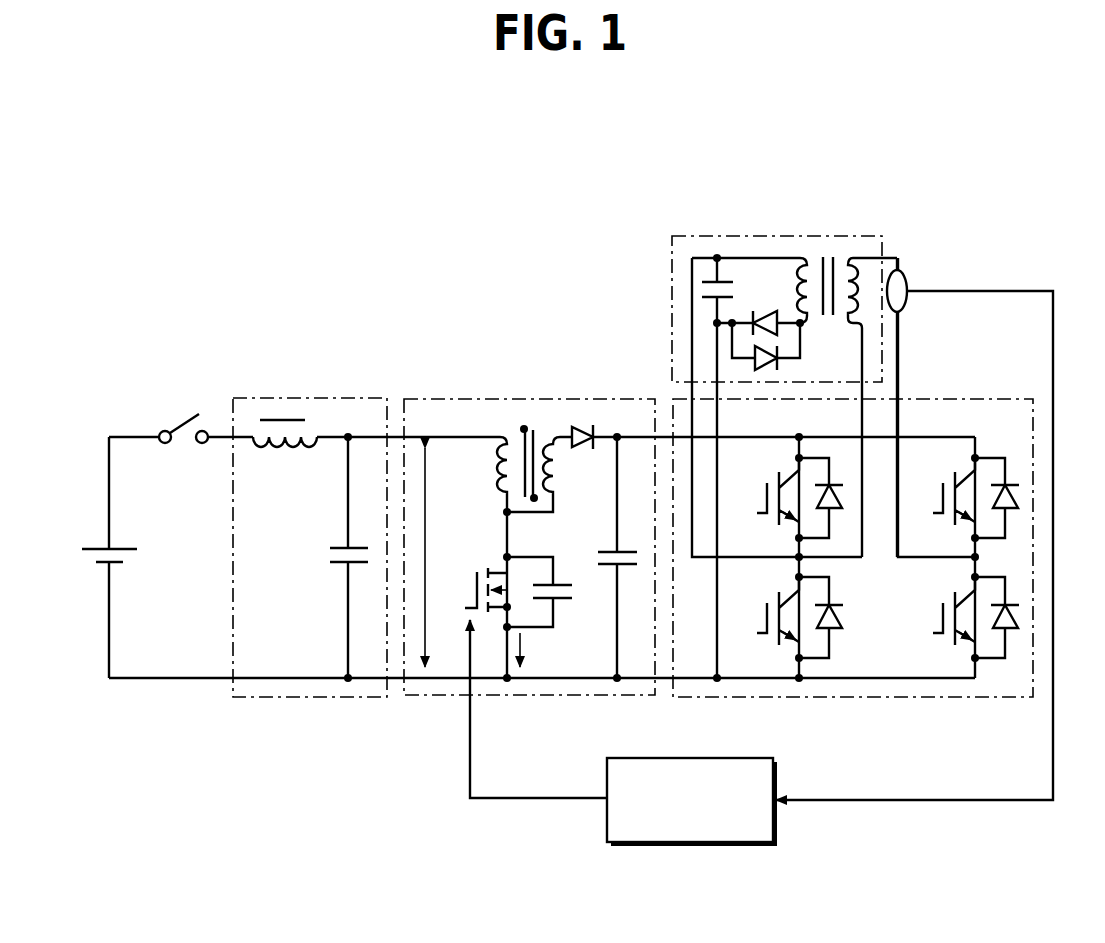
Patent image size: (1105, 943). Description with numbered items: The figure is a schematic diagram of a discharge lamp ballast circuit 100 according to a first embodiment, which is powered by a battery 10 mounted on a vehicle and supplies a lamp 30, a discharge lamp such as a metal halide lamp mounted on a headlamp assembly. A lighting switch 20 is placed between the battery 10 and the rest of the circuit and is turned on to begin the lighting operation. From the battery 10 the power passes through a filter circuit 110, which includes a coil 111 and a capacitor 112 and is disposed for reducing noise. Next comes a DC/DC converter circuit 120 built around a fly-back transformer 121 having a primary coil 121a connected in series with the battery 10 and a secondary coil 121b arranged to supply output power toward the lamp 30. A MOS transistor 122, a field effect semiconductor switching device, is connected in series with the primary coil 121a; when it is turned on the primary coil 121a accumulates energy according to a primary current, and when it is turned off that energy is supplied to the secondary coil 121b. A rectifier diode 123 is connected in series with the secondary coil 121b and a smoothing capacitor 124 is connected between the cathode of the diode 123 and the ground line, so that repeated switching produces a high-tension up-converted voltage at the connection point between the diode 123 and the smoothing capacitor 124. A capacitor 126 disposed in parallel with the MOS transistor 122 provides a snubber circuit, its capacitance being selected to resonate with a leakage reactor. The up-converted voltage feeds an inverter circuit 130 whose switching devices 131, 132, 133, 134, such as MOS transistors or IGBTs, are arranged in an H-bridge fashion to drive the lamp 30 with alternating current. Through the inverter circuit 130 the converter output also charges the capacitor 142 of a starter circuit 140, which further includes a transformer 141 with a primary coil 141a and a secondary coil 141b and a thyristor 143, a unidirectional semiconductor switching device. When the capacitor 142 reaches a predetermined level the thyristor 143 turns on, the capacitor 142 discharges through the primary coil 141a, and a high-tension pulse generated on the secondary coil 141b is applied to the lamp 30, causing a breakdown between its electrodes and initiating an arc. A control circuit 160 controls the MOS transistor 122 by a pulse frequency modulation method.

The battery 10 is at (92, 548).
The lighting switch 20 is at (185, 420).
The lamp 30 is at (907, 282).
The discharge lamp ballast circuit 100 is at (397, 713).
The filter circuit 110 is at (283, 698).
The coil 111 is at (280, 418).
The capacitor 112 is at (340, 563).
The DC/DC converter circuit 120 is at (545, 698).
The fly-back transformer 121 is at (534, 420).
The primary coil 121a is at (493, 478).
The secondary coil 121b is at (568, 478).
The MOS transistor 122 is at (482, 572).
The rectifier diode 123 is at (578, 427).
The smoothing capacitor 124 is at (613, 567).
The capacitor 126 is at (563, 603).
The inverter circuit 130 is at (910, 698).
The switching device 131 is at (766, 488).
The switching device 132 is at (757, 636).
The switching device 133 is at (943, 488).
The switching device 134 is at (940, 620).
The starter circuit 140 is at (672, 262).
The transformer 141 is at (828, 162).
The primary coil 141a is at (790, 278).
The secondary coil 141b is at (858, 265).
The capacitor 142 is at (705, 280).
The thyristor 143 is at (765, 310).
The control circuit 160 is at (737, 842).